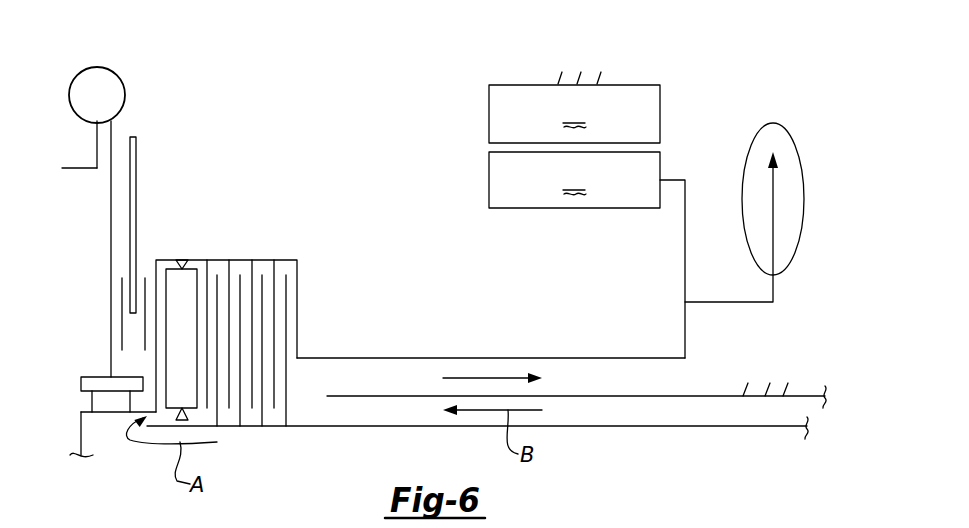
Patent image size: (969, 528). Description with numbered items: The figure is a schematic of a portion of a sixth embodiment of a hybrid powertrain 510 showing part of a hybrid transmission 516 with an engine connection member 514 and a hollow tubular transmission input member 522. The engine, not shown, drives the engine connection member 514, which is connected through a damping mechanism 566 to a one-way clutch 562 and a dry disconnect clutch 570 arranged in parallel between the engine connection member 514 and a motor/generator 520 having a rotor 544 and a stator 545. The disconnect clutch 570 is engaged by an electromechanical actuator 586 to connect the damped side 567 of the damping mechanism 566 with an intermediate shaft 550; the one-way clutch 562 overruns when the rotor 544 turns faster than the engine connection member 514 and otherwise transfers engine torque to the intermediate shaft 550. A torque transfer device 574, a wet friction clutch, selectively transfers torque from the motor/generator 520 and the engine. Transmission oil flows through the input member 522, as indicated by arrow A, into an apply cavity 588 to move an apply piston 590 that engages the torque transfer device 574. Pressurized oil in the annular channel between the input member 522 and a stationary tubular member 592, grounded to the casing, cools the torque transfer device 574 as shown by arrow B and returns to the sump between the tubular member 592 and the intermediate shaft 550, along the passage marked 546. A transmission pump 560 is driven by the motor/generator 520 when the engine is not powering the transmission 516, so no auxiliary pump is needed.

The hybrid powertrain 510 is at (598, 104).
The engine connection member 514 is at (82, 172).
The hybrid transmission 516 is at (312, 112).
The motor/generator 520 is at (683, 114).
The transmission input member 522 is at (765, 426).
The rotor 544 is at (574, 180).
The stator 545 is at (574, 114).
The flow line 546 is at (783, 395).
The intermediate shaft 550 is at (396, 358).
The transmission pump 560 is at (797, 147).
The one-way clutch 562 is at (75, 399).
The damping mechanism 566 is at (85, 67).
The damped side 567 is at (111, 128).
The disconnect clutch 570 is at (147, 250).
The torque transfer device 574 is at (262, 236).
The electromechanical actuator 586 is at (137, 163).
The apply cavity 588 is at (163, 361).
The apply piston 590 is at (178, 295).
The stationary tubular member 592 is at (708, 396).